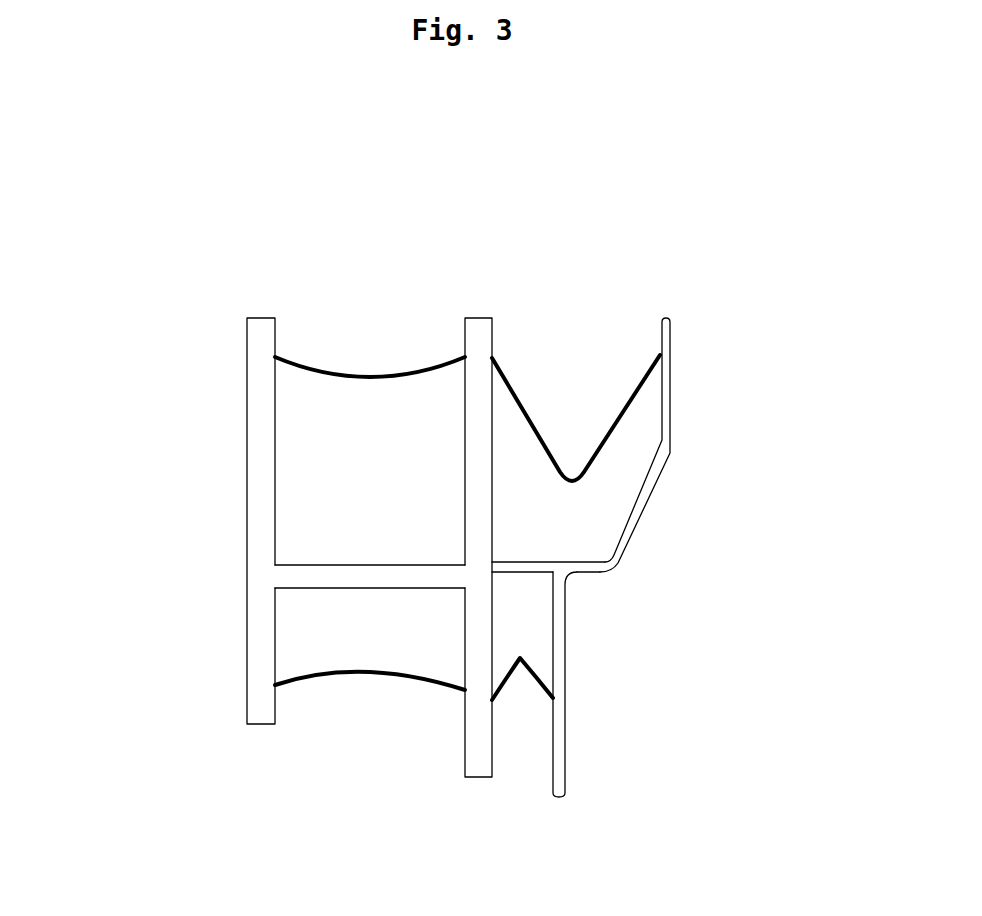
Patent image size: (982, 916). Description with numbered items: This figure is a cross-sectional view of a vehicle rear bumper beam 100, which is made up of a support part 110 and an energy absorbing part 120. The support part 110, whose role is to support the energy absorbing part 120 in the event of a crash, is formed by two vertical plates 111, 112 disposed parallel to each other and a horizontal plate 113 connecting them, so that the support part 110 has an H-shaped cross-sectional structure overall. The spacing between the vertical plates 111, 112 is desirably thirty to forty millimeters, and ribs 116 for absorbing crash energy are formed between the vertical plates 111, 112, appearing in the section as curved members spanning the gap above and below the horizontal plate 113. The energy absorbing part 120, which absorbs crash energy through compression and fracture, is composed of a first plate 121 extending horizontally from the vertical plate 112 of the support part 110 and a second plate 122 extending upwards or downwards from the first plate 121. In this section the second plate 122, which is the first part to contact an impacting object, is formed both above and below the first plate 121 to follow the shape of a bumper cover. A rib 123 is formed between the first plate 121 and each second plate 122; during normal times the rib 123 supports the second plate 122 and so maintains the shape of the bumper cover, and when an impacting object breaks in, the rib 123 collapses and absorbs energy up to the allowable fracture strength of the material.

The vehicle rear bumper beam 100 is at (93, 147).
The support part 110 is at (228, 510).
The vertical plate 111 is at (264, 333).
The vertical plate 112 is at (478, 333).
The horizontal plate 113 is at (371, 578).
The rib 116 is at (374, 357).
The energy absorbing part 120 is at (633, 587).
The first plate 121 is at (523, 562).
The second plate 122 is at (668, 432).
The rib 123 is at (630, 398).